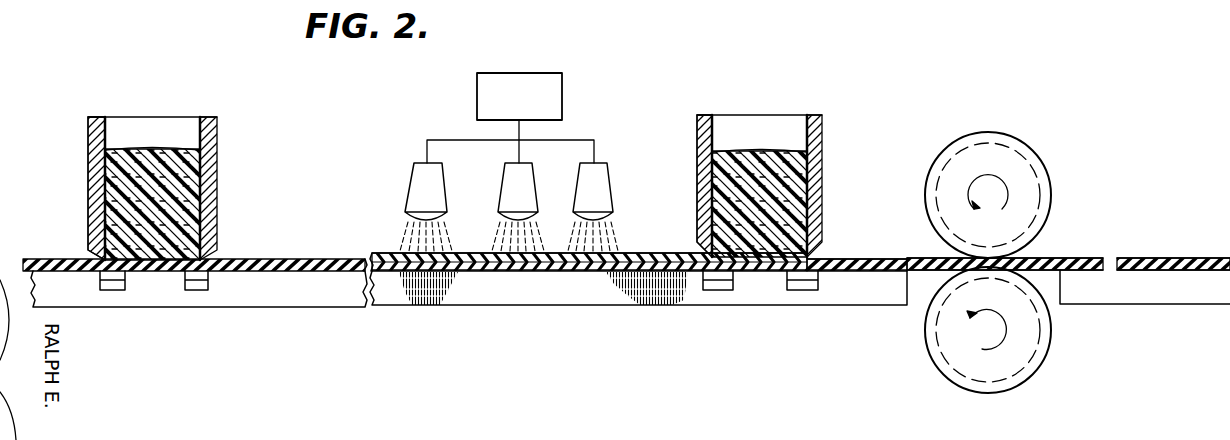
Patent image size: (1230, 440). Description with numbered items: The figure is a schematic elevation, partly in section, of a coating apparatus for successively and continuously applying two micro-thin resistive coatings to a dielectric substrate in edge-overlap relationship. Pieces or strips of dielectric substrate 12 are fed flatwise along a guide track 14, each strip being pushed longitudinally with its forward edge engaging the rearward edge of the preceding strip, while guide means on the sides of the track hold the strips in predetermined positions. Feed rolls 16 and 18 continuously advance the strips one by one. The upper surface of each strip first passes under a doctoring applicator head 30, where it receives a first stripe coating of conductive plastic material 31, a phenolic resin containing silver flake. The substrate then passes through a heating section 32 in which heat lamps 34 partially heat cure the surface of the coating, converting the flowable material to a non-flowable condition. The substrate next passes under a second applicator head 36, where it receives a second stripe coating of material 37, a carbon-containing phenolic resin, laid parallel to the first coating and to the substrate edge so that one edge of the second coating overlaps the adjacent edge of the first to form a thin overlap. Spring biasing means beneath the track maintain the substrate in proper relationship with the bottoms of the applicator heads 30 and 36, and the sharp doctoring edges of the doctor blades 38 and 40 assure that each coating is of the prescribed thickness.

The dielectric substrate 12 is at (300, 259).
The guide track 14 is at (287, 293).
The feed roll 16 is at (1043, 195).
The feed roll 18 is at (1037, 355).
The doctoring applicator head 30 is at (812, 118).
The conductive plastic material 31 is at (758, 150).
The heating section 32 is at (557, 97).
The heat lamps 34 is at (513, 183).
The second applicator head 36 is at (217, 145).
The second coating material 37 is at (155, 148).
The doctor blade 38 is at (706, 117).
The doctor blade 40 is at (88, 132).